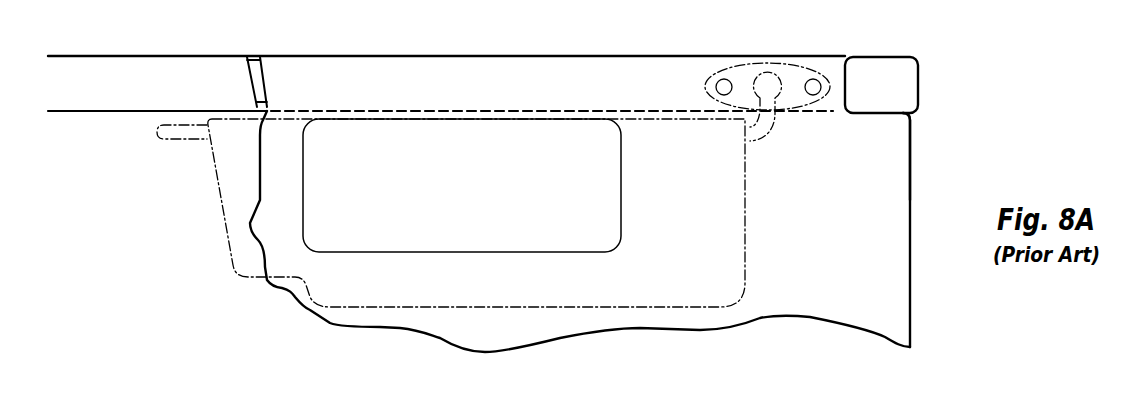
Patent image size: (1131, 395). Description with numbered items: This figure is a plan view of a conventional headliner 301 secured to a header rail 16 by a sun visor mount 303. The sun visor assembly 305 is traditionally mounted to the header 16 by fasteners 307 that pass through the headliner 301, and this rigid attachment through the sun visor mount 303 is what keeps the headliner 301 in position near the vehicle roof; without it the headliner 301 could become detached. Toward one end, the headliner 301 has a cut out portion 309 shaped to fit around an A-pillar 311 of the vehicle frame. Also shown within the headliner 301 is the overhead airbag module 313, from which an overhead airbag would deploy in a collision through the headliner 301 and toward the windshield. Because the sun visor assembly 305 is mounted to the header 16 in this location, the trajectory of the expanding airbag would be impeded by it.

The header rail 16 is at (398, 72).
The headliner 301 is at (832, 272).
The sun visor mount 303 is at (738, 68).
The sun visor assembly 305 is at (800, 134).
The fasteners 307 is at (815, 82).
The cut out portion 309 is at (882, 110).
The A-pillar 311 is at (903, 94).
The overhead airbag module 313 is at (325, 136).